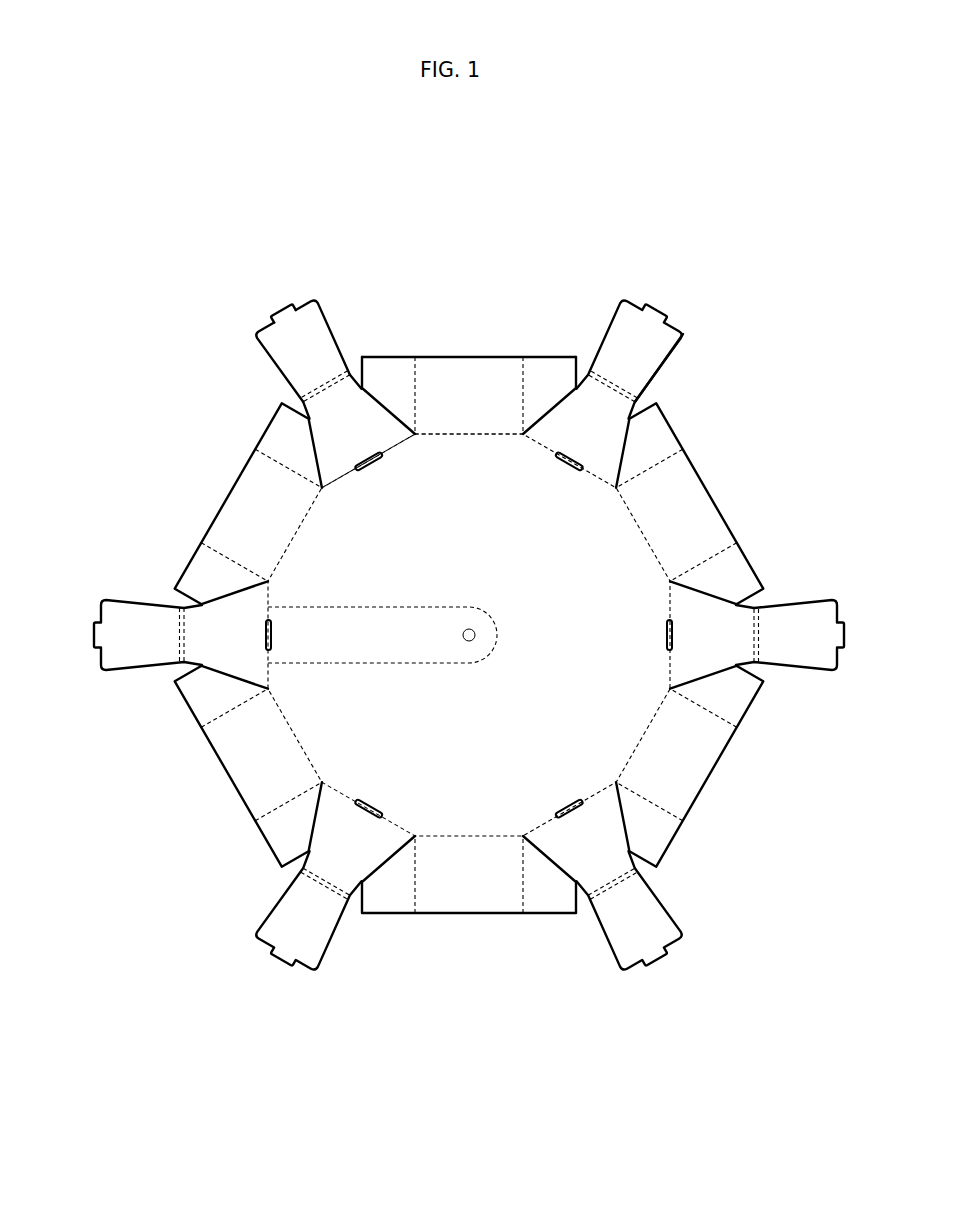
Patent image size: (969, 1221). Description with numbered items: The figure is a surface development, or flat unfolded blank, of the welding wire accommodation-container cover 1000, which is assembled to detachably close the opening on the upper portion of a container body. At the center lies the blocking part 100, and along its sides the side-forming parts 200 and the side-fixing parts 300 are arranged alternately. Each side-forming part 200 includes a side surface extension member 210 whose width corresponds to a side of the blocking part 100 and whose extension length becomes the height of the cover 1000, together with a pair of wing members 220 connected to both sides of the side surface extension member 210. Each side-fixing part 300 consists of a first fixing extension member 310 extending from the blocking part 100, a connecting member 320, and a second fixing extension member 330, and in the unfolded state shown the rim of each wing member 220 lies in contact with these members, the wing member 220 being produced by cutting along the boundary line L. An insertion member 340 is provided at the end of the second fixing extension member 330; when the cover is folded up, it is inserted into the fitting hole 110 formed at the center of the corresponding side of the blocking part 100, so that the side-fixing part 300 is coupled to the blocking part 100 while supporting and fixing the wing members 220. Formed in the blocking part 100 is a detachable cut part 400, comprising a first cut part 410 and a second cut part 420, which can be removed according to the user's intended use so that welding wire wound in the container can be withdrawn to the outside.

The welding wire accommodation-container cover 1000 is at (117, 136).
The blocking part 100 is at (613, 563).
The fitting hole 110 is at (374, 455).
The side-forming part 200 is at (478, 313).
The side surface extension member 210 is at (470, 377).
The wing member 220 is at (388, 375).
The side-fixing part 300 is at (256, 345).
The first fixing extension member 310 is at (347, 424).
The connecting member 320 is at (325, 386).
The second fixing extension member 330 is at (306, 352).
The insertion member 340 is at (265, 297).
The cut part 400 is at (276, 791).
The first cut part 410 is at (473, 641).
The second cut part 420 is at (315, 606).
The boundary line L is at (667, 363).